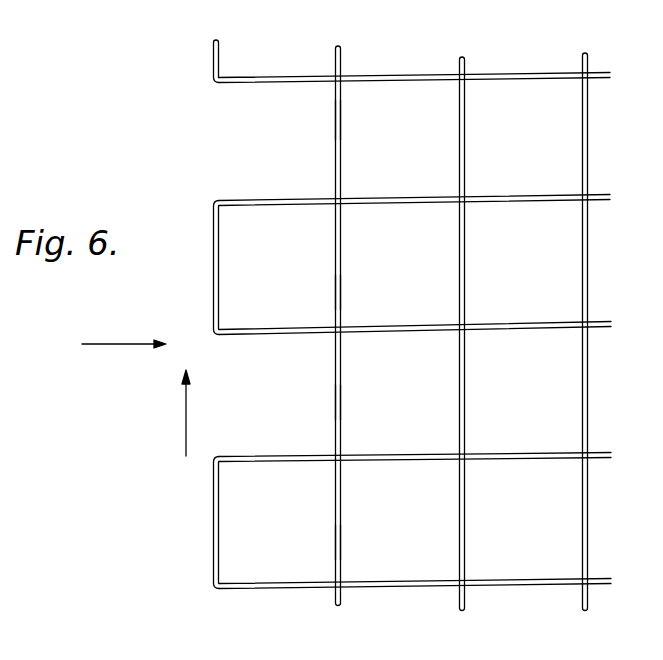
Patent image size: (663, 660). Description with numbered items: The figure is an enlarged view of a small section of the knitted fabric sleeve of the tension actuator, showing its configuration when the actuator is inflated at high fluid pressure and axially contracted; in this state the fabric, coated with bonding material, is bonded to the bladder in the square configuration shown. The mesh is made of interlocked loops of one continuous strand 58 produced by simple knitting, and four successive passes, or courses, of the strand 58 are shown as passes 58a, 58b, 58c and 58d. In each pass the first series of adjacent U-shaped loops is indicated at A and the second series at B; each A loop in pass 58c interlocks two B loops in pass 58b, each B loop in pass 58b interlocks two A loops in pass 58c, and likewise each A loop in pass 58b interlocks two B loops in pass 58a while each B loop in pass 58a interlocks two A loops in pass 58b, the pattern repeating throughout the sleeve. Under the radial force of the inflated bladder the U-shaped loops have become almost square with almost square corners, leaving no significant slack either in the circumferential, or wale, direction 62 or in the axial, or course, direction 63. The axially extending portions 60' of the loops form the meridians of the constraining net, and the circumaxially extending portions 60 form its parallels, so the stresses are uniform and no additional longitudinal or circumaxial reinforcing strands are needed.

The continuous strand 58 is at (420, 320).
The first pass of the strand 58a is at (220, 57).
The second pass of the strand 58b is at (343, 63).
The third pass of the strand 58c is at (466, 62).
The fourth pass of the strand 58d is at (588, 62).
The circumaxially extending portions 60 is at (361, 330).
The axially extending portions 60' is at (424, 601).
The circumferential (wale) direction 62 is at (108, 342).
The axial (course) direction 63 is at (186, 408).
The first series of U-shaped loops A is at (218, 257).
The second series of U-shaped loops B is at (338, 138).